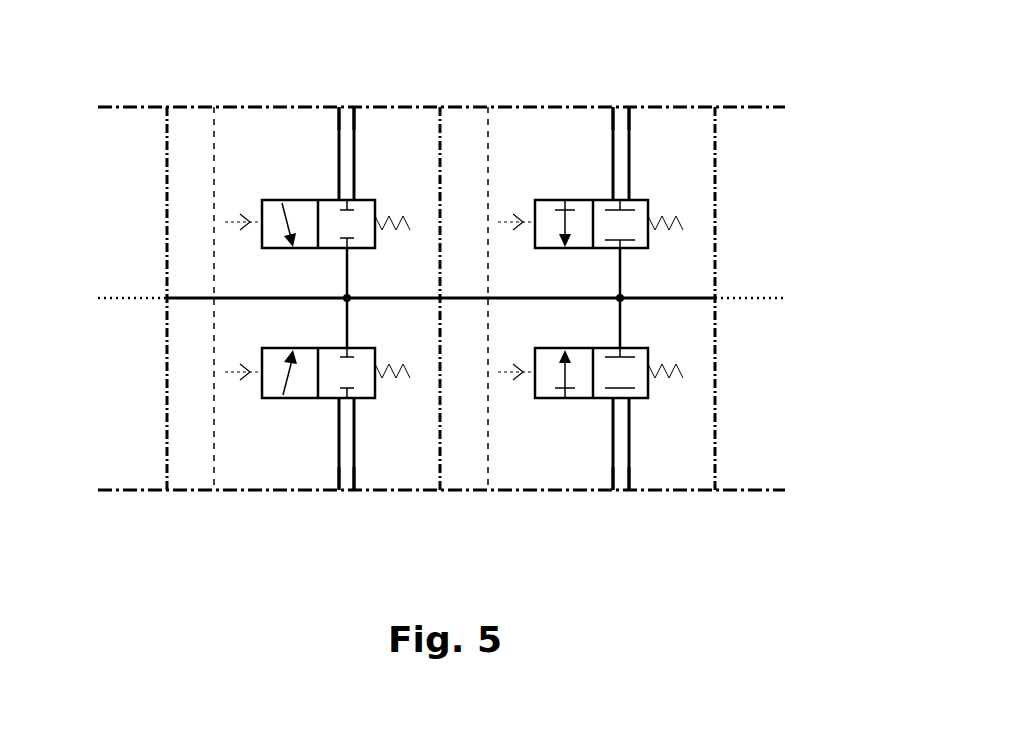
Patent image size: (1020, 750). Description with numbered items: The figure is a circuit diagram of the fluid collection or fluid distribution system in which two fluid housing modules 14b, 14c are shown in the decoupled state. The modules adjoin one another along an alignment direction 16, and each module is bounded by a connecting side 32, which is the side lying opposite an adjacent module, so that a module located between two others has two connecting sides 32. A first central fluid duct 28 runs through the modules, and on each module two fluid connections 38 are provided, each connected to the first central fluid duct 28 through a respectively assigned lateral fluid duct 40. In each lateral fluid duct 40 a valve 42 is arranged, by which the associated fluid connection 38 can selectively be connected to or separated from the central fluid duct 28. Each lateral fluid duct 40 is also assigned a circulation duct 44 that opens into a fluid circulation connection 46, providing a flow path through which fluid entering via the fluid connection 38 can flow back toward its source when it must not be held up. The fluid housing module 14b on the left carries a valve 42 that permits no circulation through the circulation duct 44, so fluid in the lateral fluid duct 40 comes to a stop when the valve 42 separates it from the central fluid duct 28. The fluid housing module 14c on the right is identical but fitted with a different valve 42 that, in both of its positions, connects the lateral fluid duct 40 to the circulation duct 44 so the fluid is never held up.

The fluid housing module 14b is at (201, 510).
The fluid housing module 14c is at (545, 512).
The alignment direction 16 is at (745, 295).
The first central fluid duct 28 is at (200, 300).
The connecting side 32 is at (450, 163).
The fluid connection 38 is at (339, 107).
The lateral fluid duct 40 is at (339, 152).
The valve 42 is at (245, 255).
The circulation duct 44 is at (355, 175).
The fluid circulation connection 46 is at (355, 107).